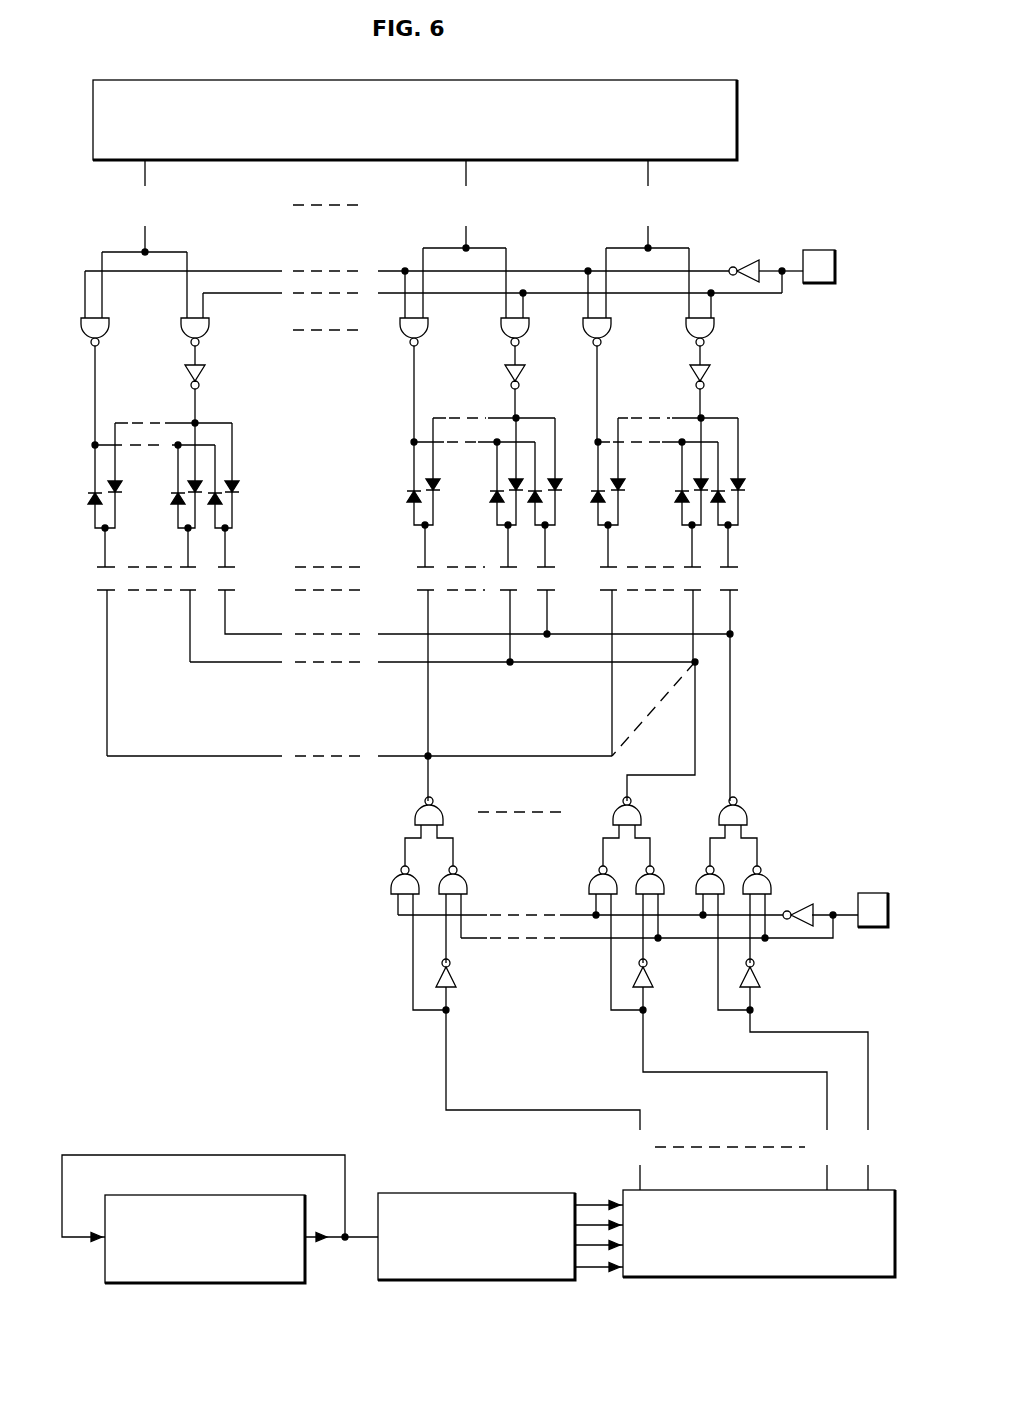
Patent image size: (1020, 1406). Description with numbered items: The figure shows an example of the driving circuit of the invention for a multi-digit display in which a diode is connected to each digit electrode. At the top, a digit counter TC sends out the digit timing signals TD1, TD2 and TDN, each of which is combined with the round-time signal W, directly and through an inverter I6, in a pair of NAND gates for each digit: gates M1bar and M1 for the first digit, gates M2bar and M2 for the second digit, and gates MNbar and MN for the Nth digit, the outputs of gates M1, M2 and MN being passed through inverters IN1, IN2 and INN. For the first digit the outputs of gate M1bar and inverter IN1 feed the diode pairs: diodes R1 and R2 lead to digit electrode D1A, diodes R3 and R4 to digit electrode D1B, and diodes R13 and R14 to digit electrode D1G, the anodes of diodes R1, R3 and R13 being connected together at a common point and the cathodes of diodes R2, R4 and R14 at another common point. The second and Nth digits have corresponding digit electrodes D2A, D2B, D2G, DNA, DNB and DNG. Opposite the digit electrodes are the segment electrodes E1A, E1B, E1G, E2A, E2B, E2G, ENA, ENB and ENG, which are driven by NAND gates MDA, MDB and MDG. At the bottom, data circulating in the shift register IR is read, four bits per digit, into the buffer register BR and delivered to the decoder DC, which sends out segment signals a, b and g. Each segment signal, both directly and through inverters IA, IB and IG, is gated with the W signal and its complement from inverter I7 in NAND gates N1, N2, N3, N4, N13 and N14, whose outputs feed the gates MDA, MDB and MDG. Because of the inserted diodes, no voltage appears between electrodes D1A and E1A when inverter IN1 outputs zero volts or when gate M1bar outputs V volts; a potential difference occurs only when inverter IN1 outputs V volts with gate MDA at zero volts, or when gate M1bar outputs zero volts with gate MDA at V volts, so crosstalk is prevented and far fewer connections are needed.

The digit counter TC is at (238, 80).
The digit timing signal TDN is at (145, 206).
The digit timing signal TD2 is at (466, 204).
The digit timing signal TD1 is at (648, 204).
The inverter I6 is at (745, 262).
The round time signal W is at (835, 588).
The NAND gate MNbar is at (167, 326).
The NAND gate MN is at (210, 330).
The inverter INN is at (206, 376).
The NAND gate M2bar is at (481, 326).
The NAND gate M2 is at (530, 330).
The inverter IN2 is at (526, 376).
The NAND gate M1bar is at (672, 326).
The NAND gate M1 is at (715, 330).
The inverter IN1 is at (711, 376).
The digit electrode DNG is at (103, 566).
The digit electrode DNB is at (185, 566).
The digit electrode DNA is at (228, 566).
The segment electrode ENG is at (105, 594).
The segment electrode ENB is at (190, 594).
The segment electrode ENA is at (228, 594).
The digit electrode D2G is at (424, 566).
The digit electrode D2B is at (507, 566).
The digit electrode D2A is at (548, 566).
The segment electrode E2G is at (426, 594).
The segment electrode E2B is at (508, 594).
The segment electrode E2A is at (548, 594).
The digit electrode D1G is at (611, 492).
The digit electrode D1B is at (684, 492).
The digit electrode D1A is at (755, 492).
The diode R1 is at (744, 482).
The diode R2 is at (724, 497).
The diode R3 is at (698, 484).
The diode R4 is at (680, 497).
The diode R13 is at (614, 482).
The diode R14 is at (597, 502).
The segment electrode E1G is at (612, 594).
The segment electrode E1B is at (693, 594).
The segment electrode E1A is at (731, 594).
The NAND gate MDG is at (440, 812).
The NAND gate MDB is at (615, 812).
The NAND gate MDA is at (720, 812).
The NAND gate N14 is at (397, 875).
The NAND gate N13 is at (460, 875).
The NAND gate N4 is at (598, 875).
The NAND gate N3 is at (644, 875).
The NAND gate N2 is at (705, 875).
The NAND gate N1 is at (763, 875).
The inverter I7 is at (802, 905).
The inverter IG is at (457, 980).
The inverter IB is at (654, 980).
The inverter IA is at (760, 980).
The segment signal g is at (639, 1163).
The segment signal b is at (827, 1163).
The segment signal a is at (866, 1163).
The decoder DC is at (755, 1277).
The shift register IR is at (200, 1283).
The buffer register BR is at (485, 1193).